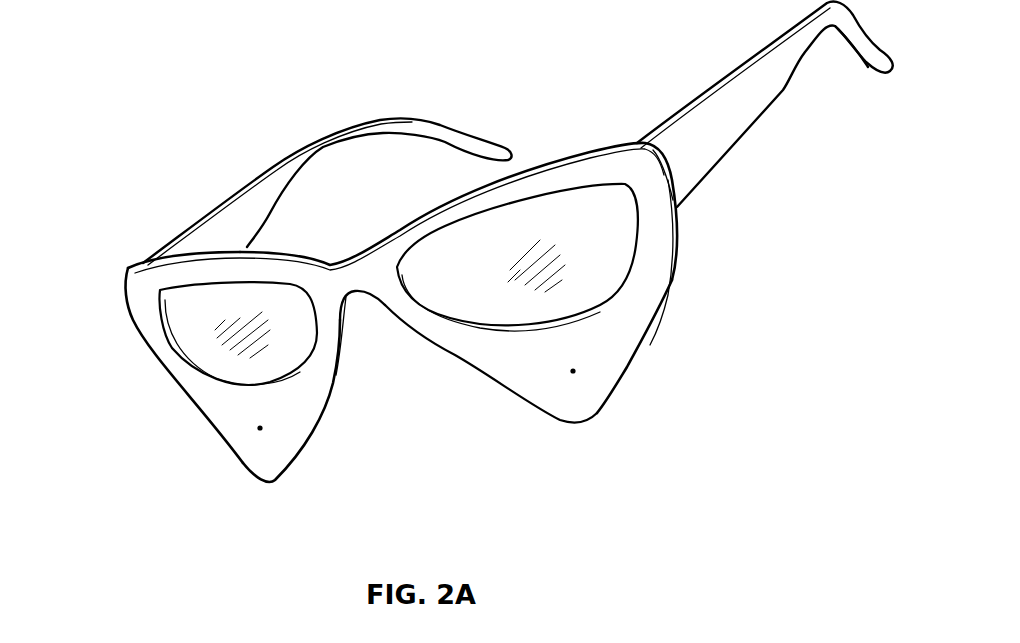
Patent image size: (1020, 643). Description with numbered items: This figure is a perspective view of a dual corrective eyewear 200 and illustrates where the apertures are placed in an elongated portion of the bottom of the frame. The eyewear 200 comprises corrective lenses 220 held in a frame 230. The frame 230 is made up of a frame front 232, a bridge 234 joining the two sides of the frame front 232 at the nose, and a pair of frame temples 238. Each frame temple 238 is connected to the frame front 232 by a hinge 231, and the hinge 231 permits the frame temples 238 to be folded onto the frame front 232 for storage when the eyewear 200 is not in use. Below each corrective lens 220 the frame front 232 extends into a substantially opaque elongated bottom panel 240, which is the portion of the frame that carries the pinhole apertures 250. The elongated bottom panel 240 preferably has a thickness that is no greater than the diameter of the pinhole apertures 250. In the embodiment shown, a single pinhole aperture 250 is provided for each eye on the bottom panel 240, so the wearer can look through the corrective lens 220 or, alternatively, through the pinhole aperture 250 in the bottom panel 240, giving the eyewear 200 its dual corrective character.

The dual corrective eyewear 200 is at (472, 262).
The corrective lens 220 is at (180, 310).
The frame 230 is at (698, 231).
The hinge 231 is at (143, 263).
The frame front 232 is at (170, 350).
The bridge 234 is at (358, 294).
The frame temple 238 is at (763, 47).
The elongated bottom panel 240 is at (628, 362).
The pinhole aperture 250 is at (258, 429).